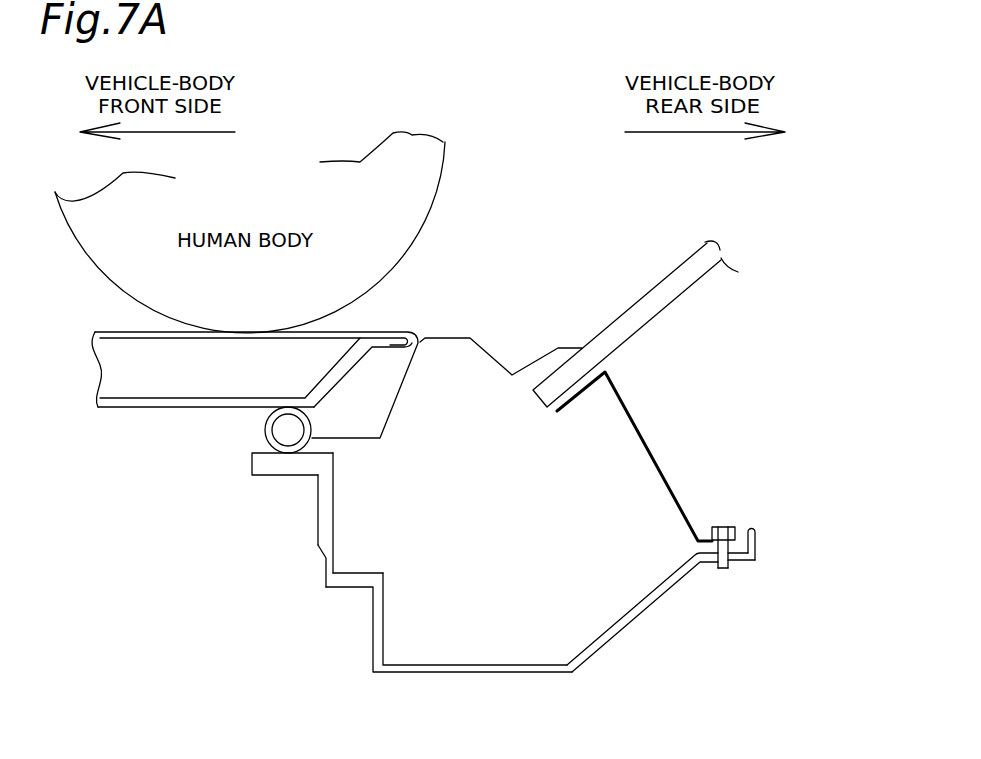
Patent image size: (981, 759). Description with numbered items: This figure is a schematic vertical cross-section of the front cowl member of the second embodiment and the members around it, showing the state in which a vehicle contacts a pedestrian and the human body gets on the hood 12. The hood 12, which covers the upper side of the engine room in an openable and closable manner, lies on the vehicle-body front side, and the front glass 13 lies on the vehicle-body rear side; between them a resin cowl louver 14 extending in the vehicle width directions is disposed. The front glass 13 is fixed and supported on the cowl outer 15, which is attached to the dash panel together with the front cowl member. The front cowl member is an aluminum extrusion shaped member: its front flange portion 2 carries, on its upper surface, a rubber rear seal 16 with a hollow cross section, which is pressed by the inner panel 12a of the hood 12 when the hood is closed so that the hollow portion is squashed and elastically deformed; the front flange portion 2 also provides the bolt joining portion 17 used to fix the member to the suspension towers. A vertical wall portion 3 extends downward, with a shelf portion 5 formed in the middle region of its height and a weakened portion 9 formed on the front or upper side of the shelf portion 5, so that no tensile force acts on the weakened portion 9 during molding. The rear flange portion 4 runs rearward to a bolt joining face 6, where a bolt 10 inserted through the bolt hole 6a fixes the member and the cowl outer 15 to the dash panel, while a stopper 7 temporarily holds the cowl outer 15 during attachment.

The front flange portion 2 is at (273, 507).
The bolt joining portion 17 is at (280, 477).
The vertical wall portion 3 is at (479, 568).
The rear flange portion 4 is at (600, 627).
The shelf portion 5 is at (356, 573).
The bolt joining face 6 is at (751, 544).
The bolt hole 6a is at (723, 570).
The stopper 7 is at (755, 540).
The weakened portion 9 is at (326, 565).
The bolt 10 is at (711, 544).
The hood 12 is at (227, 385).
The inner panel 12a is at (147, 407).
The front glass 13 is at (658, 290).
The cowl louver 14 is at (457, 338).
The cowl outer 15 is at (632, 402).
The rear seal 16 is at (262, 430).